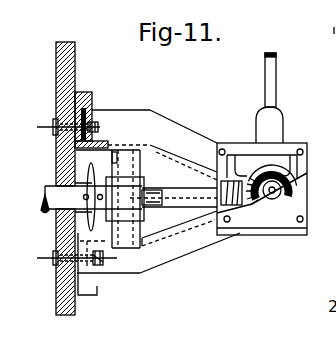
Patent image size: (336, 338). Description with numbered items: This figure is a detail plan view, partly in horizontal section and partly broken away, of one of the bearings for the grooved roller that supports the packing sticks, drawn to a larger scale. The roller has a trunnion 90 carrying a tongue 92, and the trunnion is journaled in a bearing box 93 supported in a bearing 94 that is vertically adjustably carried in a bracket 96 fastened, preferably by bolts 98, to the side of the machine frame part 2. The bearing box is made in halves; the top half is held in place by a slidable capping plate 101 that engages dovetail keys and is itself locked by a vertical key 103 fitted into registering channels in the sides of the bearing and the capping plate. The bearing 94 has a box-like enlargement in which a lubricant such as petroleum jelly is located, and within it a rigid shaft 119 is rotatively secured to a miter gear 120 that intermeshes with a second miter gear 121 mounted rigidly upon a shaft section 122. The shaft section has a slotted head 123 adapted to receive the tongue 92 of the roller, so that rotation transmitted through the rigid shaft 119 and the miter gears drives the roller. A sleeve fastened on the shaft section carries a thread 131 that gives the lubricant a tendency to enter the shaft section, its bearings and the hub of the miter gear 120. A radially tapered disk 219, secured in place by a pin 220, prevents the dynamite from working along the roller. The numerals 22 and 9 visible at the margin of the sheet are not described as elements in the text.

The machine frame part 2 is at (56, 63).
The bracket 96 is at (79, 96).
The bolt 98 is at (52, 126).
The vertical key 103 is at (110, 157).
The radially tapered disk 219 is at (58, 170).
The pin 220 is at (46, 191).
The trunnion 90 is at (55, 206).
The slidable capping plate 101 is at (135, 250).
The bearing box 93 is at (148, 175).
The tongue 92 is at (164, 172).
The bearing 94 is at (185, 245).
The slotted head 123 is at (154, 208).
The shaft section 122 is at (194, 222).
The second miter gear 121 is at (244, 166).
The miter gear 120 is at (287, 180).
The thread 131 is at (273, 152).
The rigid shaft 119 is at (276, 66).
The frame (partial) 22 is at (333, 192).
The unit (partial) 9 is at (334, 262).